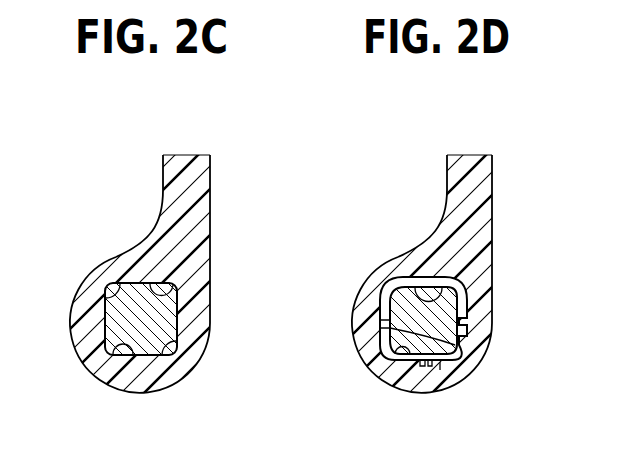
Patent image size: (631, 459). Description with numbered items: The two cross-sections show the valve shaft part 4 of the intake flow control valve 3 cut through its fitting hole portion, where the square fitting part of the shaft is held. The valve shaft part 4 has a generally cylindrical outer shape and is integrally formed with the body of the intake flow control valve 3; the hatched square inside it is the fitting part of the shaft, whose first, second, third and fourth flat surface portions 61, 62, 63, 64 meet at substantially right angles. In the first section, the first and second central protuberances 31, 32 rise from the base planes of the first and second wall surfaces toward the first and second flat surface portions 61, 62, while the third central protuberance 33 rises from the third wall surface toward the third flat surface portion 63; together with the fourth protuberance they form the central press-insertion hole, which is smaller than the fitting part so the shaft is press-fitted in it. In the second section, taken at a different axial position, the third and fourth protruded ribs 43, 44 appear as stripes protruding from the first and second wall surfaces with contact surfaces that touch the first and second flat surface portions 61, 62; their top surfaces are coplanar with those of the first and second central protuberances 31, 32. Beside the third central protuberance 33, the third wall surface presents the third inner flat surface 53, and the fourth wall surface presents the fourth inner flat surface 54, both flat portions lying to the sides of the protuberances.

In FIG. 2C, the intake flow control valve 3 is at (192, 177).
In FIG. 2D, the intake flow control valve 3 is at (478, 176).
In FIG. 2C, the valve shaft part 4 is at (198, 362).
In FIG. 2D, the valve shaft part 4 is at (480, 360).
In FIG. 2C, the fourth flat surface portion 64 is at (142, 283).
In FIG. 2D, the fourth flat surface portion 64 is at (424, 292).
In FIG. 2C, the third central protuberance 33 is at (120, 283).
In FIG. 2C, the first flat surface portion 61 is at (179, 315).
In FIG. 2D, the first flat surface portion 61 is at (468, 320).
In FIG. 2C, the third flat surface portion 63 is at (105, 325).
In FIG. 2D, the third flat surface portion 63 is at (387, 322).
In FIG. 2C, the second central protuberance 32 is at (112, 356).
In FIG. 2C, the second flat surface portion 62 is at (140, 357).
In FIG. 2D, the second flat surface portion 62 is at (424, 364).
In FIG. 2C, the first central protuberance 31 is at (170, 357).
In FIG. 2D, the third protruded ribs 43 is at (460, 304).
In FIG. 2D, the fourth inner flat surface 54 is at (466, 300).
In FIG. 2D, the fourth protruded ribs 44 is at (393, 356).
In FIG. 2D, the third inner flat surface 53 is at (438, 363).